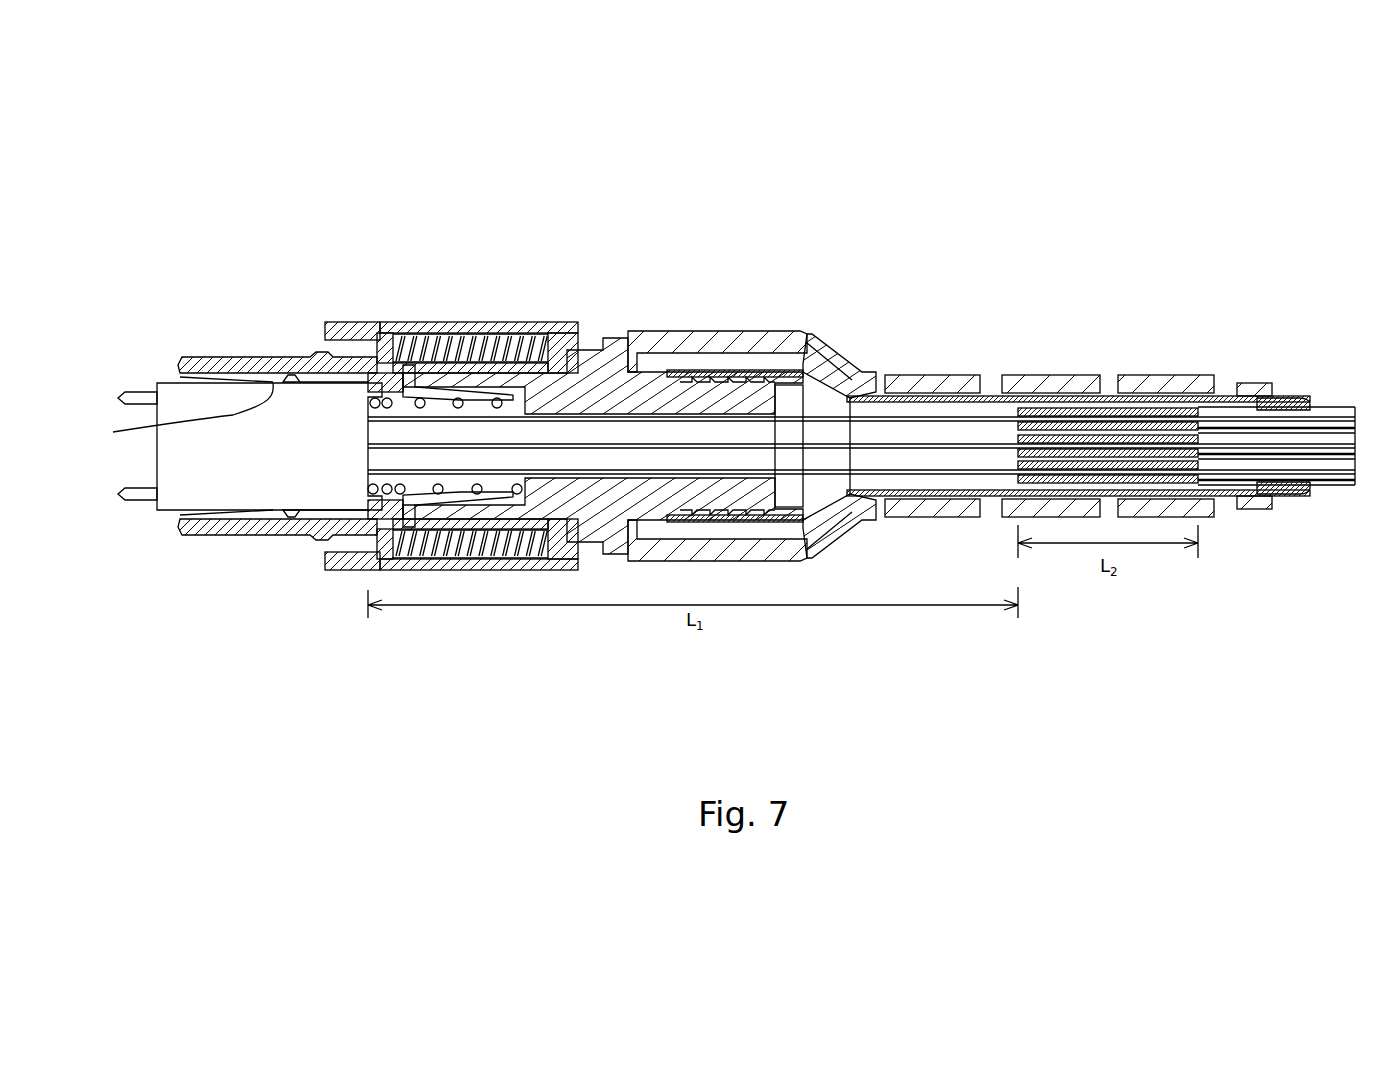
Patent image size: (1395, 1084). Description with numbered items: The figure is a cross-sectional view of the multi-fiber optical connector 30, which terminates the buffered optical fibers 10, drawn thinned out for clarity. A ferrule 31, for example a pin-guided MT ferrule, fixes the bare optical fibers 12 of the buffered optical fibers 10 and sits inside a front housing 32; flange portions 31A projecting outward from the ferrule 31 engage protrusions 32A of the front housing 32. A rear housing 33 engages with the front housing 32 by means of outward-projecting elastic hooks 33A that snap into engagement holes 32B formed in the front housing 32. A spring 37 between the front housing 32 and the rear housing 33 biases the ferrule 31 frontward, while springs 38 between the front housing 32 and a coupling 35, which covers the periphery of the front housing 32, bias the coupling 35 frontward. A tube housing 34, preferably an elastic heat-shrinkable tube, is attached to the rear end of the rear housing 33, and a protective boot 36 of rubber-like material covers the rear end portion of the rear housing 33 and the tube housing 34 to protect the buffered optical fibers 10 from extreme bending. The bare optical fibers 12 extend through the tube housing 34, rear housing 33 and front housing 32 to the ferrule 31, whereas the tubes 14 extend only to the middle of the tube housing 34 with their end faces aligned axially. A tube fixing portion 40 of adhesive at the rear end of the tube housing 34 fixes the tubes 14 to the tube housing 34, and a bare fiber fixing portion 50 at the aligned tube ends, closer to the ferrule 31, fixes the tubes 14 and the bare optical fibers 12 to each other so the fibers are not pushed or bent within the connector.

The buffered optical fibers 10 is at (1340, 394).
The bare optical fibers 12 is at (960, 417).
The tubes 14 is at (1229, 395).
The multi-fiber optical connector 30 is at (1148, 146).
The ferrule 31 is at (238, 488).
The flange portions 31A is at (273, 382).
The front housing 32 is at (229, 363).
The protrusions 32A is at (171, 416).
The engagement holes 32B is at (378, 362).
The rear housing 33 is at (596, 340).
The elastic hooks 33A is at (411, 363).
The tube housing 34 is at (795, 342).
The coupling 35 is at (509, 322).
The protective boot 36 is at (721, 340).
The spring 37 is at (462, 398).
The springs 38 is at (456, 360).
The tube fixing portion 40 is at (1310, 498).
The bare fiber fixing portion 50 is at (1111, 410).